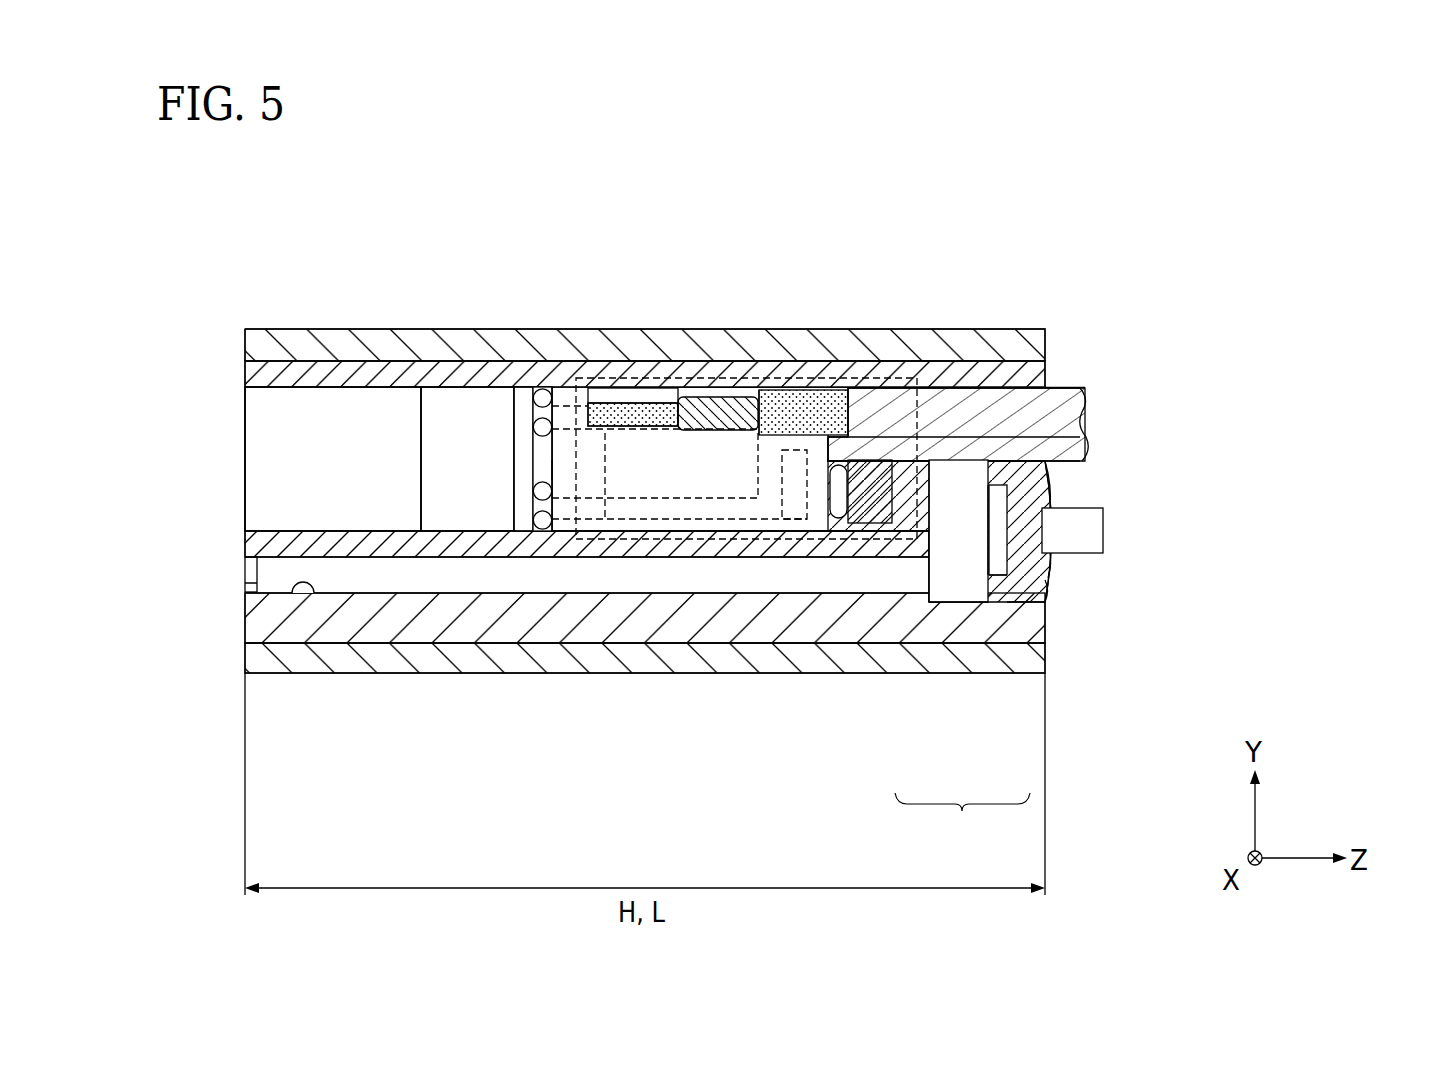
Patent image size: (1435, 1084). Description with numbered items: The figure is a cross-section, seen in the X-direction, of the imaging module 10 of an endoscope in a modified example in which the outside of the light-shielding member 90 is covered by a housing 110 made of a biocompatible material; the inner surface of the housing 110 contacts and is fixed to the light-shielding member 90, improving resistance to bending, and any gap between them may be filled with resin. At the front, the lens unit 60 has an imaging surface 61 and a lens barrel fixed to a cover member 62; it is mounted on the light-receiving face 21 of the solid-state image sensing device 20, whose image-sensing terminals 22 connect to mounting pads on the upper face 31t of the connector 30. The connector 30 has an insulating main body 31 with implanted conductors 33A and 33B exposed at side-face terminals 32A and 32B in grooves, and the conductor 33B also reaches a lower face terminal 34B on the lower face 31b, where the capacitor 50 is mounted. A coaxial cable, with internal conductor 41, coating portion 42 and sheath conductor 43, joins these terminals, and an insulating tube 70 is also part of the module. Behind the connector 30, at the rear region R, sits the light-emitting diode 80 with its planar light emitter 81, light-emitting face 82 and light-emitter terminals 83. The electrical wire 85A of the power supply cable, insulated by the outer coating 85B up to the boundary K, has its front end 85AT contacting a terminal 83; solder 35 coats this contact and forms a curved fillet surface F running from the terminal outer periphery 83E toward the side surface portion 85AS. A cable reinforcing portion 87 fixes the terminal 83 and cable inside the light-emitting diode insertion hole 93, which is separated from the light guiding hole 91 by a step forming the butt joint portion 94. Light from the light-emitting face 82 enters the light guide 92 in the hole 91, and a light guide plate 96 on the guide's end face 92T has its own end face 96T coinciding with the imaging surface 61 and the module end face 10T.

The imaging module 10 is at (1192, 104).
The end face of imaging module 10T is at (212, 396).
The housing 110 is at (294, 336).
The light-shielding member 90 is at (376, 366).
The imaging surface 61 is at (245, 457).
The lens unit 60 is at (345, 500).
The cover member 62 is at (468, 505).
The light guide plate 96 is at (248, 562).
The end face of light guide plate 96T is at (247, 578).
The end face of light guide 92T is at (247, 585).
The light guiding hole 91 is at (296, 596).
The light guide 92 is at (390, 570).
The solid-state image sensing device 20 is at (527, 388).
The light-receiving face 21 is at (514, 410).
The image-sensing terminals 22 is at (545, 410).
The main body 31 is at (648, 470).
The upper face of connector 31t is at (552, 470).
The connector 30 is at (562, 532).
The electrical wire 85A is at (1050, 565).
The outer coating 85B is at (1072, 537).
The curved surface F is at (1066, 468).
The rear region R is at (984, 450).
The coating portion 42 is at (703, 397).
The internal conductor 41 is at (630, 403).
The side-face terminal 32A is at (655, 405).
The sheath conductor 43 is at (775, 398).
The side-face terminal 32B is at (832, 398).
The insulating tube 70 is at (826, 380).
The implanted conductor 33A is at (607, 523).
The implanted conductor 33B is at (687, 519).
The lower face terminal 34B is at (800, 520).
The lower face of main body 31b is at (838, 470).
The capacitor 50 is at (872, 505).
The butt joint portion 94 is at (930, 507).
The light-emitting face 82 is at (932, 600).
The light emitter 81 is at (975, 603).
The light-emitter terminals 83 is at (1000, 577).
The terminal outer periphery 83E is at (1005, 578).
The light-emitting diode 80 is at (962, 820).
The electrical-wire front end 85AT is at (992, 525).
The boundary K is at (1045, 512).
The side surface portion 85AS is at (1055, 500).
The light-emitting diode insertion hole 93 is at (1030, 603).
The cable reinforcing portion 87 is at (1047, 588).
The solder 35 is at (1050, 575).